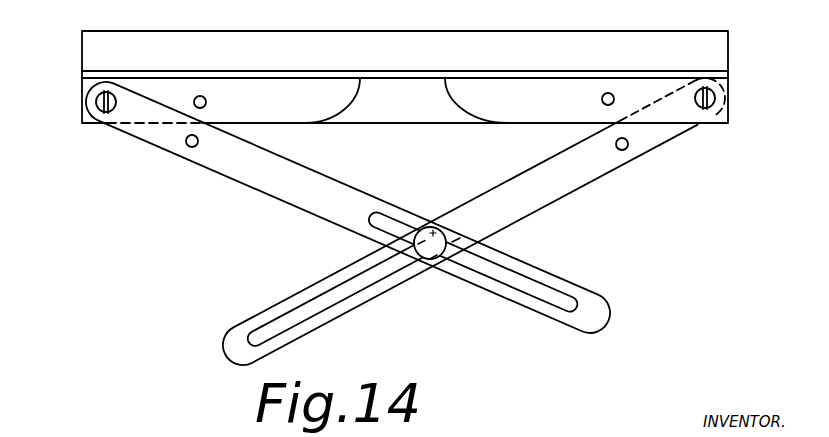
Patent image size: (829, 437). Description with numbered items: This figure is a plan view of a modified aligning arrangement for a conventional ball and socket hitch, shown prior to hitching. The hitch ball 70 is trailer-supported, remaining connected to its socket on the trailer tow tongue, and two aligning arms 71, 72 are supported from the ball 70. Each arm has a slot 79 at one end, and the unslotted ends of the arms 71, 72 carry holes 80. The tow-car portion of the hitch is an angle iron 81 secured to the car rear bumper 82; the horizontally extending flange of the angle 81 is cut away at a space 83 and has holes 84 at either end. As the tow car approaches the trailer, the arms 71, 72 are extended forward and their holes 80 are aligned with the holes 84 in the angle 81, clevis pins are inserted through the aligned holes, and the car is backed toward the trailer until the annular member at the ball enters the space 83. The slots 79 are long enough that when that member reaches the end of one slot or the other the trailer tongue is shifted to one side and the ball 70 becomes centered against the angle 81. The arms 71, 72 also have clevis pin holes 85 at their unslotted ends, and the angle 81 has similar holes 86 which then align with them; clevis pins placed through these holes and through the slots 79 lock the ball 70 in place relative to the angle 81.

The hitch ball 70 is at (433, 230).
The aligning arm 71 is at (277, 199).
The aligning arm 72 is at (557, 197).
The slot 79 is at (365, 288).
The hole 80 is at (101, 112).
The angle iron 81 is at (82, 91).
The car rear bumper 82 is at (712, 39).
The cut-away space 83 is at (436, 97).
The hole 84 is at (62, 140).
The clevis pin hole 85 is at (189, 147).
The hole 86 is at (206, 100).